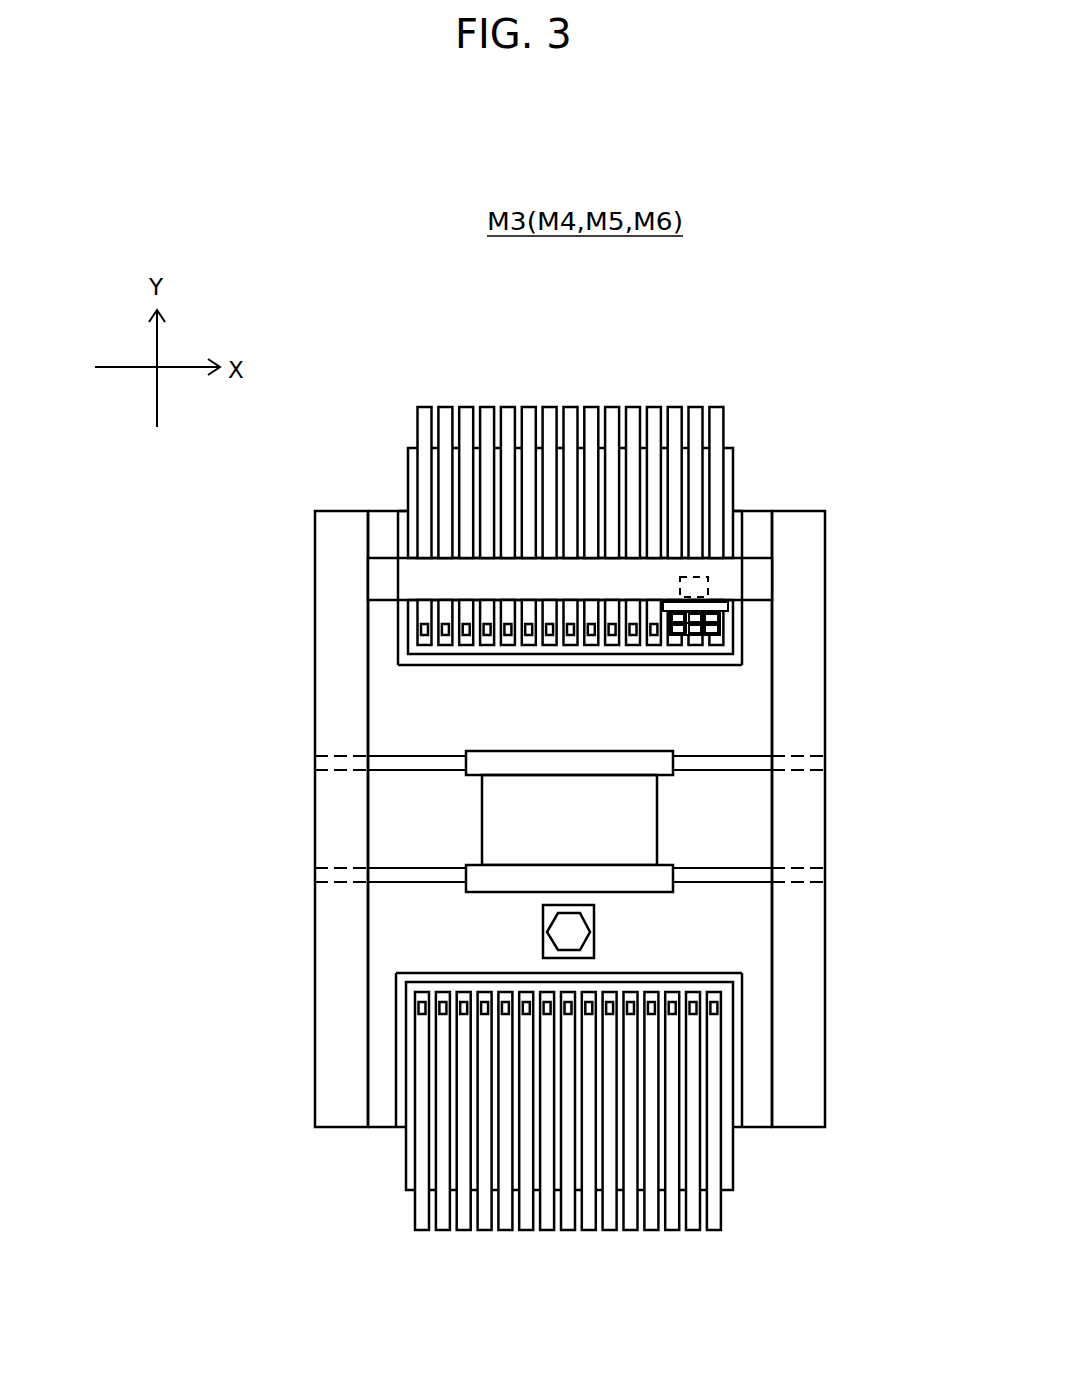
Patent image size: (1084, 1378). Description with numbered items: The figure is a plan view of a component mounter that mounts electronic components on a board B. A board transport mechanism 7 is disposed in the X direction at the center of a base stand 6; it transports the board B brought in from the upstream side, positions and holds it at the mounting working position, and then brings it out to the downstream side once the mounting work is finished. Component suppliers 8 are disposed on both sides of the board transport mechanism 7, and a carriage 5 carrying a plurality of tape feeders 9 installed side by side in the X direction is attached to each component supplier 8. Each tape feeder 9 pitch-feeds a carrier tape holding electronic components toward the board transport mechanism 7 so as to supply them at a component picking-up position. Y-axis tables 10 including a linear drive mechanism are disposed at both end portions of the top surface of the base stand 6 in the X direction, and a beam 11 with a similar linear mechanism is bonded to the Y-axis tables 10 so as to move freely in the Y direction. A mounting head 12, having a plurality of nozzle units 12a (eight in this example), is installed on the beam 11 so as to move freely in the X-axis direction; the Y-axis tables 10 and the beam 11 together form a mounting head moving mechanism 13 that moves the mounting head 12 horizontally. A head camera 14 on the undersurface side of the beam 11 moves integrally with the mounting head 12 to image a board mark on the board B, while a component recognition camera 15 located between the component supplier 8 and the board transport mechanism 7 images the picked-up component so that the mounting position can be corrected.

The carriage 5 is at (728, 465).
The base stand 6 is at (400, 716).
The board transport mechanism 7 is at (730, 877).
The component supplier 8 is at (592, 803).
The tape feeder 9 is at (569, 825).
The Y-axis table 10 is at (340, 626).
The beam 11 is at (383, 578).
The mounting head 12 is at (783, 628).
The nozzle unit 12a is at (700, 628).
The mounting head moving mechanism 13 is at (527, 819).
The head camera 14 is at (687, 592).
The component recognition camera 15 is at (565, 930).
The board B is at (551, 815).